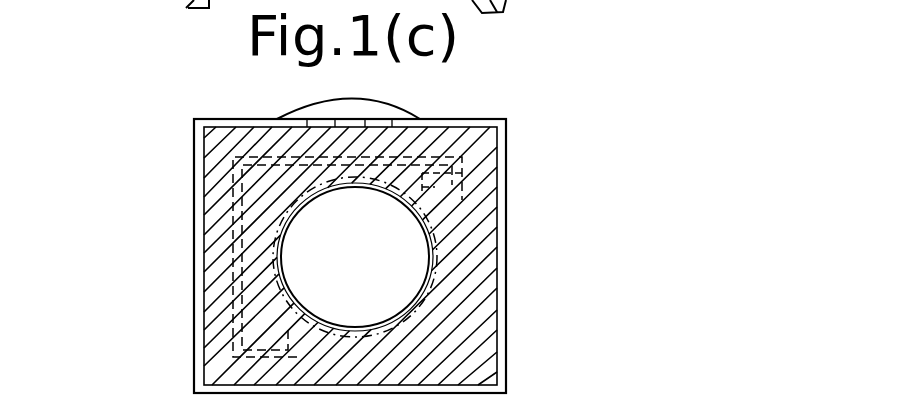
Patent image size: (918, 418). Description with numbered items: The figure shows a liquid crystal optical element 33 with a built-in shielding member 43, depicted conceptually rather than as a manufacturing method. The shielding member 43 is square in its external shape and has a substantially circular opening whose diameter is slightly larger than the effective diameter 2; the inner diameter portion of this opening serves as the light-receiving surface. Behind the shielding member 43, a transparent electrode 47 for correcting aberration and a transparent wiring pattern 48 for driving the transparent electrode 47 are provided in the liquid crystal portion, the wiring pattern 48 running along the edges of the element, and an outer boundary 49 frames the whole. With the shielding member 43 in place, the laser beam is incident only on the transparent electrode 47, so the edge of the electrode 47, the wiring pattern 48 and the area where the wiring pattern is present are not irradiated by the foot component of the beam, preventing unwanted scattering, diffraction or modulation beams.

The liquid crystal optical element 33 is at (158, 282).
The outer frame 49 is at (506, 143).
The shielding member 43 is at (492, 318).
The effective diameter 2 is at (422, 213).
The transparent electrode 47 is at (445, 268).
The transparent wiring pattern 48 is at (267, 158).